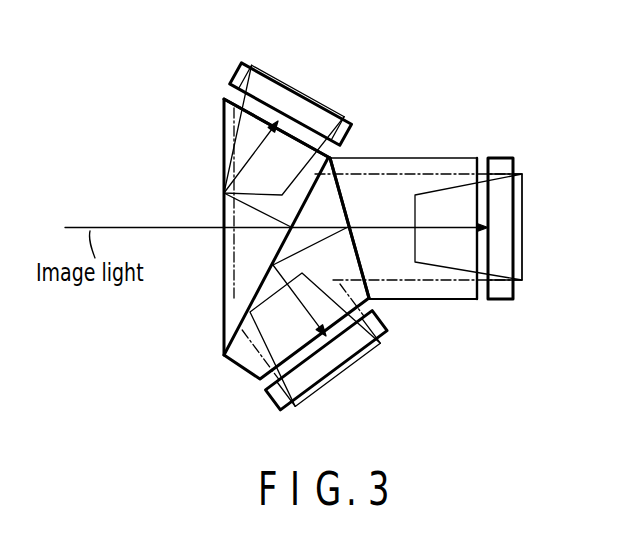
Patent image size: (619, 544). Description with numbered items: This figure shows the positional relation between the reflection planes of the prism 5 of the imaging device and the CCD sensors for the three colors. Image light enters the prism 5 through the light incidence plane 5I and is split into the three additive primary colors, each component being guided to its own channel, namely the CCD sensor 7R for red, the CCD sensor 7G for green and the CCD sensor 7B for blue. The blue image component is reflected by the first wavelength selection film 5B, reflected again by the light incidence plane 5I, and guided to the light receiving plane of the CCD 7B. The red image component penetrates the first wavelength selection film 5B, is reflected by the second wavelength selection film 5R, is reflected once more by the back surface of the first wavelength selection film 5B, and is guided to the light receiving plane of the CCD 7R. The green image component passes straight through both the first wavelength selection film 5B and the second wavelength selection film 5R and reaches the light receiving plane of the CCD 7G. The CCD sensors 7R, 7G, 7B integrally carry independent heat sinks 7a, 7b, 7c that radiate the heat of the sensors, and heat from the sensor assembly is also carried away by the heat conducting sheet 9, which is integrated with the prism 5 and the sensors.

The prism 5 is at (222, 329).
The first wavelength selection film 5B is at (338, 189).
The second wavelength selection film 5R is at (375, 300).
The light incidence plane 5I is at (222, 135).
The CCD sensor for blue 7B is at (278, 93).
The CCD sensor for red 7R is at (338, 358).
The CCD sensor for green 7G is at (507, 209).
The heat sink 7a is at (240, 160).
The heat sink 7b is at (453, 201).
The heat sink 7c is at (272, 340).
The heat conducting sheet 9 is at (420, 162).